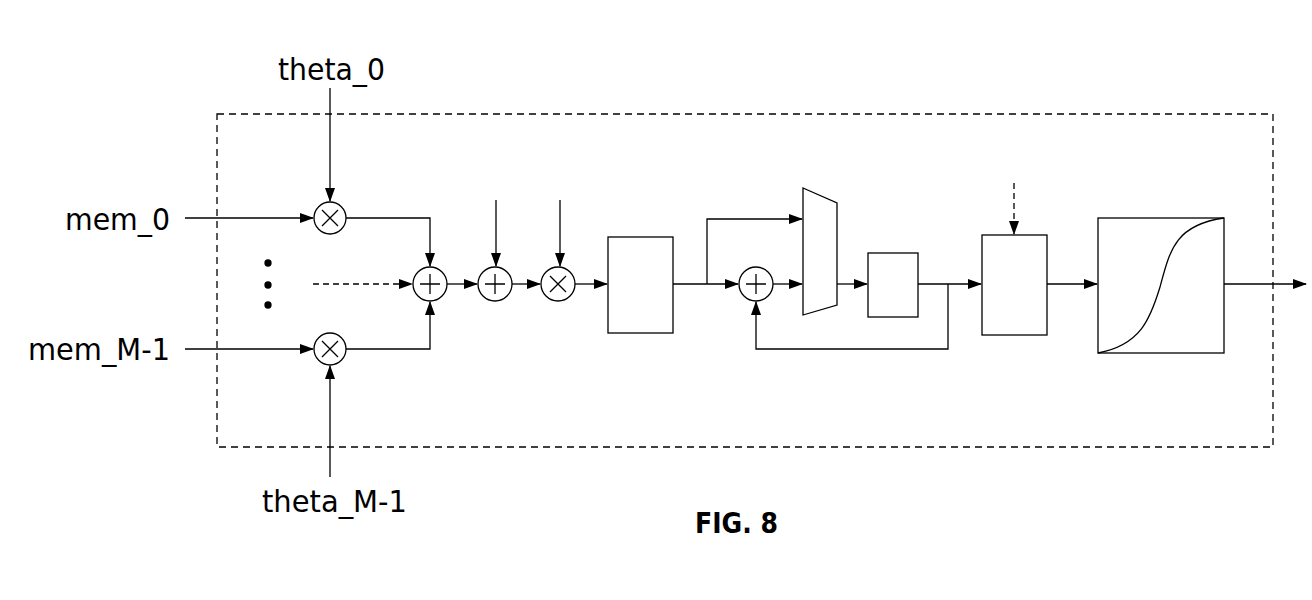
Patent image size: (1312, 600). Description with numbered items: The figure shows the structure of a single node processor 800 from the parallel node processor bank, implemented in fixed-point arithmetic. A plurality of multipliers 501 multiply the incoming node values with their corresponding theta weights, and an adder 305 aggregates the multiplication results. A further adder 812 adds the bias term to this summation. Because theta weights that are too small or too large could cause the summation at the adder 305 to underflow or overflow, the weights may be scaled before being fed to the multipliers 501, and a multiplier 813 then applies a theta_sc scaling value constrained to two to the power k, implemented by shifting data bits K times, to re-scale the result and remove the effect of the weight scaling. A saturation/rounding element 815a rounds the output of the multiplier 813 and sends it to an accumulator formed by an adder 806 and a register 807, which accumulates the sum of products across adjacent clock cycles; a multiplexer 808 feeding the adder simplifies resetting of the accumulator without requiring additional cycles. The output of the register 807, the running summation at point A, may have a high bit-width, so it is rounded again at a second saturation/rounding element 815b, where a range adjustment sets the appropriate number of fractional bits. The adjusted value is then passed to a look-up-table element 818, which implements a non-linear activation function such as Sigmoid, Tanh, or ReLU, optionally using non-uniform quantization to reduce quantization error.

The node processor 800 is at (251, 38).
The multipliers 501 is at (317, 206).
The adder 305 is at (438, 301).
The adder 812 is at (496, 302).
The multiplier 813 is at (561, 302).
The saturation/rounding element 815a is at (645, 335).
The accumulator adder 806 is at (766, 300).
The multiplexer 808 is at (820, 194).
The register 807 is at (900, 252).
The saturation/rounding element 815b is at (1013, 336).
The look-up-table (LUT) element 818 is at (1160, 354).